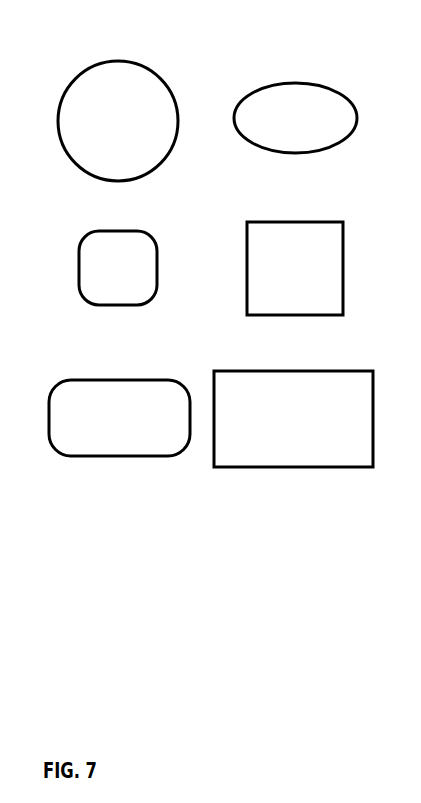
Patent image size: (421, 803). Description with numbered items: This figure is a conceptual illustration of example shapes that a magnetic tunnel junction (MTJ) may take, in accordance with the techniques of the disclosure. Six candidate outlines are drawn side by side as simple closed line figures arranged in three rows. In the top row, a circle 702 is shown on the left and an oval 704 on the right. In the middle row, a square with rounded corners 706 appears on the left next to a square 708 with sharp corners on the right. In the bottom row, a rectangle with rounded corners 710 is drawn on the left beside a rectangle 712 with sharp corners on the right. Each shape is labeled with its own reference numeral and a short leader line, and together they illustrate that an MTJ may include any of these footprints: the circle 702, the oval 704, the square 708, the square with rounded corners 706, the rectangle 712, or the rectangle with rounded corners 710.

The circle 702 is at (139, 64).
The oval 704 is at (324, 88).
The square with rounded corners 706 is at (146, 233).
The square 708 is at (308, 221).
The rectangle with rounded corners 710 is at (130, 379).
The rectangle 712 is at (361, 370).